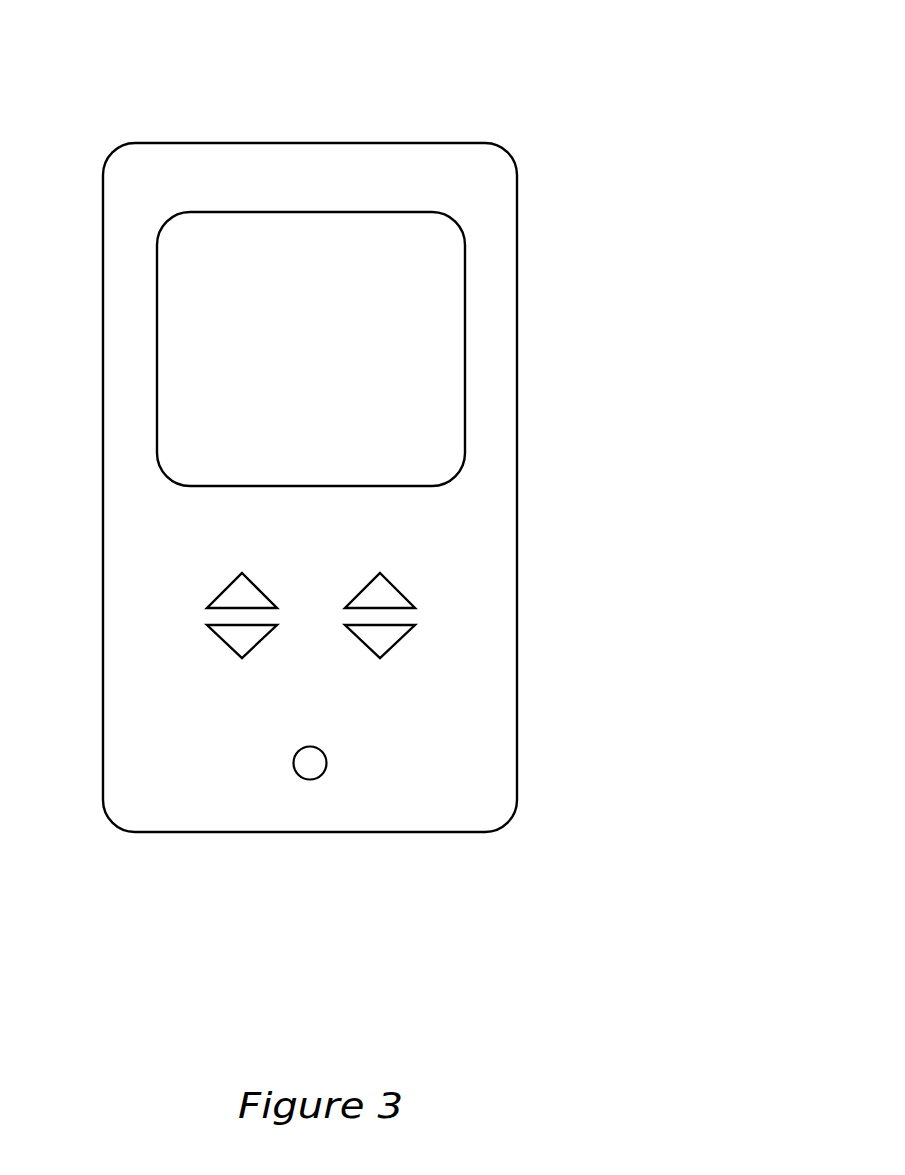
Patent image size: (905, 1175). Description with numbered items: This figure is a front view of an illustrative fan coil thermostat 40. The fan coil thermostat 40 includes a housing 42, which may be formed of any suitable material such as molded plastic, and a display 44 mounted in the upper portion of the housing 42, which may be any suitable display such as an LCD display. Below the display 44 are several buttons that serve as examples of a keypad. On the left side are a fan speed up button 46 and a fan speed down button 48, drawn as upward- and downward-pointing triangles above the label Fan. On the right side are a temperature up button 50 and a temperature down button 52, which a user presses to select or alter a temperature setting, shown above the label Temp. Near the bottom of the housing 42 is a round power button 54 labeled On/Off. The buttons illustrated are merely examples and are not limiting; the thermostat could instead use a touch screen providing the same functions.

The fan coil thermostat 40 is at (502, 72).
The housing 42 is at (518, 228).
The display 44 is at (443, 395).
The fan speed up button 46 is at (228, 590).
The fan speed down button 48 is at (228, 643).
The temperature up button 50 is at (400, 584).
The temperature down button 52 is at (400, 641).
The power button 54 is at (317, 762).